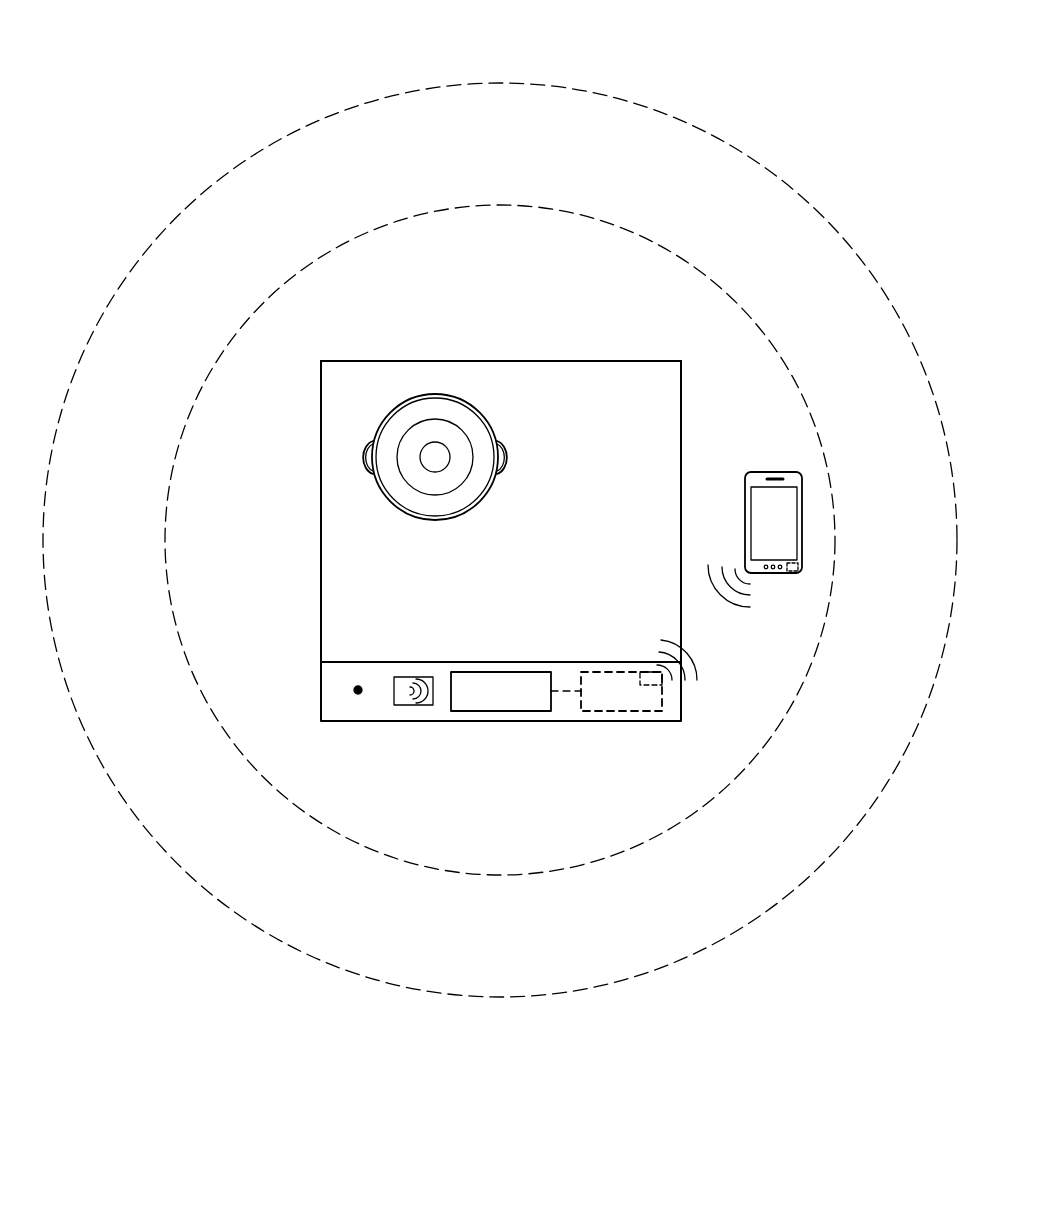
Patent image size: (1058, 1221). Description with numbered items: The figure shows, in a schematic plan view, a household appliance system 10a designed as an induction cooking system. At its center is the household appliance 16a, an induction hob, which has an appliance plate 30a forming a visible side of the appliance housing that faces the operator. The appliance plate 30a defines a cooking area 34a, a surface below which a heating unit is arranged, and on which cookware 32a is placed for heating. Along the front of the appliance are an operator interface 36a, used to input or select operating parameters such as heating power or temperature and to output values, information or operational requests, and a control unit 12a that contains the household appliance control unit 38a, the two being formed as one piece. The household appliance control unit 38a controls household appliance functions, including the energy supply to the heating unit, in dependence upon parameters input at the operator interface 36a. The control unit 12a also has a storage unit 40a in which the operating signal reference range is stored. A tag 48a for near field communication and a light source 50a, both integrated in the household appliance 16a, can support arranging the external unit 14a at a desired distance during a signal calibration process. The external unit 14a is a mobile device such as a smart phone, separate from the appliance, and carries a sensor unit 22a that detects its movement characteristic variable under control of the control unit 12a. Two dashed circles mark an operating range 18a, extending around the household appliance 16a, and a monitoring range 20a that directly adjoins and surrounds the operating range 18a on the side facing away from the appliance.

The household appliance system 10a is at (500, 553).
The control unit 12a is at (614, 681).
The external unit 14a is at (775, 467).
The household appliance 16a is at (793, 162).
The operating range 18a is at (303, 266).
The monitoring range 20a is at (182, 206).
The sensor unit 22a is at (802, 567).
The appliance plate 30a is at (558, 433).
The cookware 32a is at (457, 382).
The cooking area 34a is at (640, 427).
The operator interface 36a is at (503, 685).
The household appliance control unit 38a is at (621, 691).
The storage unit 40a is at (663, 681).
The tag 48a is at (419, 711).
The light source 50a is at (352, 703).